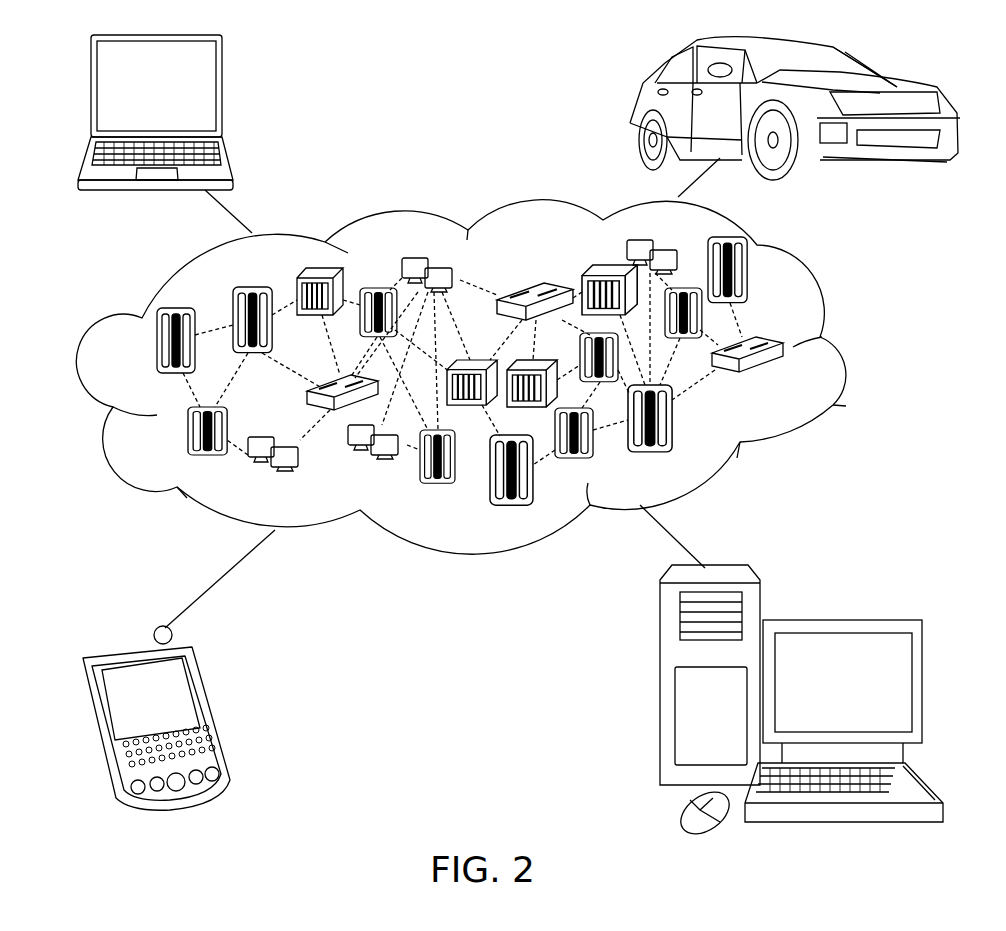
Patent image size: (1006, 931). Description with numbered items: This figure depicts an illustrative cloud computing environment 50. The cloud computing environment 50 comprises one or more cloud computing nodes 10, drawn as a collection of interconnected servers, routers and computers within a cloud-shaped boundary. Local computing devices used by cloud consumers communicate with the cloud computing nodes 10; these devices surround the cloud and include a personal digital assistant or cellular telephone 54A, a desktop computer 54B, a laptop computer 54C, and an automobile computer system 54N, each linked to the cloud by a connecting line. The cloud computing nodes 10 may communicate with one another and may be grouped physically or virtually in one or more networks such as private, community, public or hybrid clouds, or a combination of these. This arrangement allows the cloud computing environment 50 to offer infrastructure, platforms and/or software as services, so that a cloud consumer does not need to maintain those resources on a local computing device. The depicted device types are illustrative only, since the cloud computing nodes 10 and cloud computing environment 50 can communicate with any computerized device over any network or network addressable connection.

The laptop computer 54C is at (222, 93).
The automobile computer system 54N is at (636, 108).
The cloud computing environment 50 is at (485, 377).
The cloud computing node 10 is at (795, 383).
The personal digital assistant (PDA) or cellular telephone 54A is at (208, 712).
The desktop computer 54B is at (838, 620).